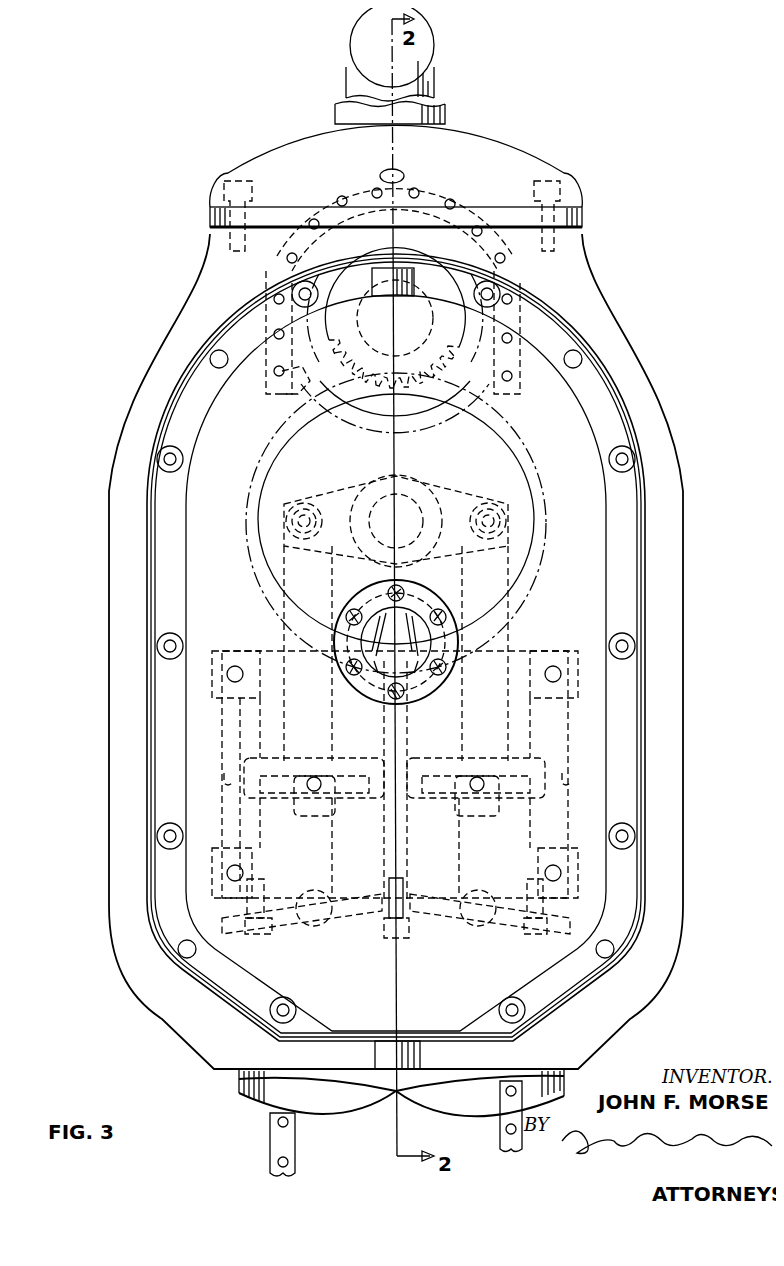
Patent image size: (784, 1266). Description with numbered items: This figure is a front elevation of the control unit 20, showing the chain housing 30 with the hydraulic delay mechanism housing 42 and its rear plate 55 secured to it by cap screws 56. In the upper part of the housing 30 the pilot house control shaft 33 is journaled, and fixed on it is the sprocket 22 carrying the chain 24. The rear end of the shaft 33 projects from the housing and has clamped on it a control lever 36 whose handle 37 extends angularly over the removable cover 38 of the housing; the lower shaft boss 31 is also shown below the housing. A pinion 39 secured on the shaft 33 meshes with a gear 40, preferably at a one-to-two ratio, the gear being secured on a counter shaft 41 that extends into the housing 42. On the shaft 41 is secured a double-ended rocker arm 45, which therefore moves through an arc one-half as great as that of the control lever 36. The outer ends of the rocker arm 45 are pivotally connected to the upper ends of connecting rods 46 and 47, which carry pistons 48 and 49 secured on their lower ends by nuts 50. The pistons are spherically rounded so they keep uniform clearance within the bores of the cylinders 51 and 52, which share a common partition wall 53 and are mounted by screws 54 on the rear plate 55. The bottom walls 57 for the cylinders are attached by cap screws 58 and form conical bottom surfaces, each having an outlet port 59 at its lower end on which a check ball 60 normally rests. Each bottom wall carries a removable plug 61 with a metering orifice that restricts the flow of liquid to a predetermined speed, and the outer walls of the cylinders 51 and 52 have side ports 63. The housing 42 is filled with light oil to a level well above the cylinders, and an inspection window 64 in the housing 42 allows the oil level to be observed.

The steering control unit 20 is at (696, 632).
The sprocket 22 is at (280, 398).
The chain 24 is at (432, 196).
The housing 30 is at (658, 378).
The shaft tube 31 is at (245, 1092).
The pilot house control shaft 33 is at (413, 280).
The control lever 36 is at (333, 117).
The handle 37 is at (426, 40).
The removable cover 38 is at (500, 150).
The pinion 39 is at (440, 340).
The gear 40 is at (290, 440).
The counter shaft 41 is at (396, 506).
The housing for the hydraulic delay mechanism 42 is at (598, 537).
The double-ended rocker arm 45 is at (444, 486).
The connecting rod 46 is at (286, 598).
The connecting rod 47 is at (506, 565).
The piston 48 is at (258, 738).
The piston 49 is at (448, 750).
The nut 50 is at (330, 812).
The cylinder 51 is at (222, 748).
The cylinder 52 is at (556, 750).
The common partition wall 53 is at (403, 850).
The screw 54 is at (222, 676).
The rear plate 55 is at (244, 312).
The cap screw 56 is at (296, 287).
The bottom wall 57 is at (363, 934).
The cap screw 58 is at (403, 941).
The outlet port 59 is at (406, 958).
The check ball 60 is at (318, 876).
The removable plug 61 is at (378, 890).
The side port 63 is at (575, 780).
The inspection window 64 is at (400, 610).